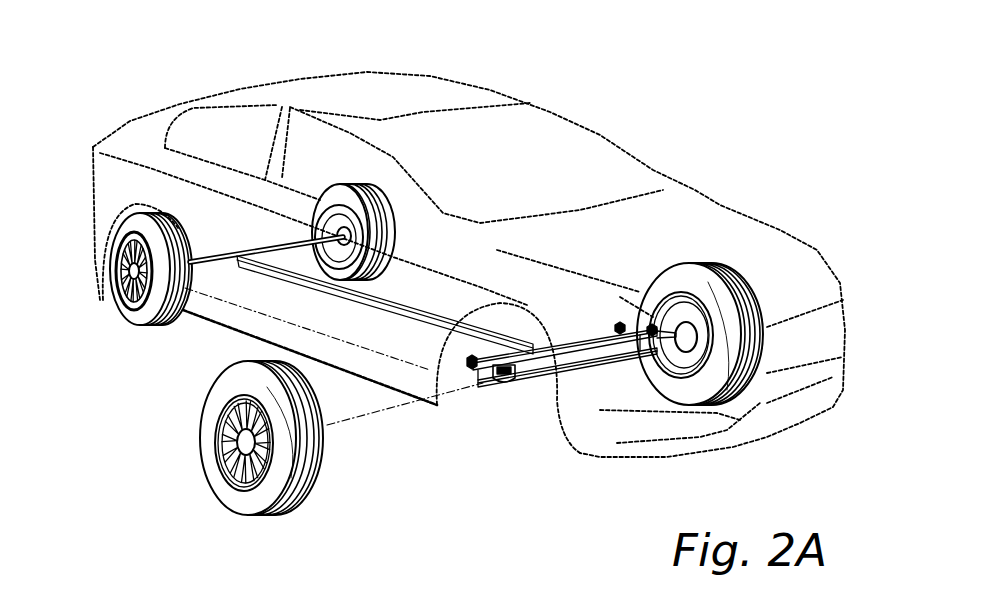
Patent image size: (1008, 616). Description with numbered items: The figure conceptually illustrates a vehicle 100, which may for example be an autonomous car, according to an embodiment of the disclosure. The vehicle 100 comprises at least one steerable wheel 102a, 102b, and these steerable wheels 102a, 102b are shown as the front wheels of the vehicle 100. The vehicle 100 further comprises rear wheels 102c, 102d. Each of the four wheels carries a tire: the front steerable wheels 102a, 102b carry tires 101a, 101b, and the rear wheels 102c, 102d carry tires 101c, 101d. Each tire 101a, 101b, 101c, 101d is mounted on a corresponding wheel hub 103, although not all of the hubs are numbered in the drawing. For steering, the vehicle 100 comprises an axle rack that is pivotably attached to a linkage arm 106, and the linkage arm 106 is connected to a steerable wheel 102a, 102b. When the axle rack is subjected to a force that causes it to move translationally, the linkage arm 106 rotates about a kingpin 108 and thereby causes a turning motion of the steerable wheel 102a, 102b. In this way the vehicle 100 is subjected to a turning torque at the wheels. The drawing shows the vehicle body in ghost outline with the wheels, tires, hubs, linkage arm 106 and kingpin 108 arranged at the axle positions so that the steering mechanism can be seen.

The vehicle 100 is at (682, 90).
The tire 101a is at (753, 295).
The tire 101b is at (263, 502).
The tire 101c is at (173, 323).
The tire 101d is at (337, 183).
The steerable wheel 102a is at (720, 264).
The steerable wheel 102b is at (323, 483).
The rear wheel 102c is at (148, 322).
The rear wheel 102d is at (370, 182).
The wheel hub 103 is at (118, 277).
The linkage arm 106 is at (553, 345).
The kingpin 108 is at (517, 382).